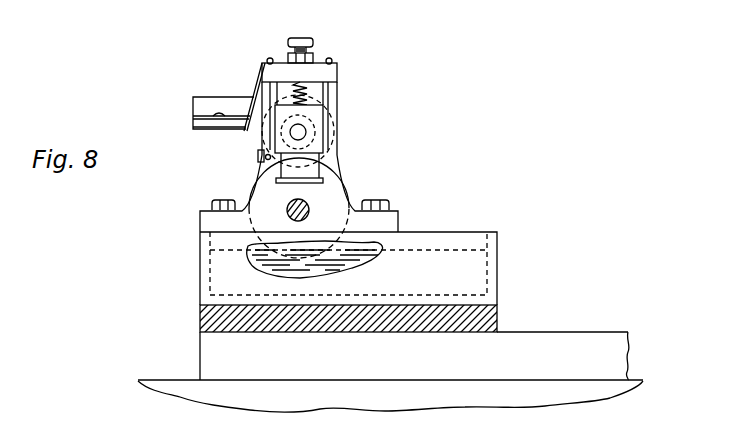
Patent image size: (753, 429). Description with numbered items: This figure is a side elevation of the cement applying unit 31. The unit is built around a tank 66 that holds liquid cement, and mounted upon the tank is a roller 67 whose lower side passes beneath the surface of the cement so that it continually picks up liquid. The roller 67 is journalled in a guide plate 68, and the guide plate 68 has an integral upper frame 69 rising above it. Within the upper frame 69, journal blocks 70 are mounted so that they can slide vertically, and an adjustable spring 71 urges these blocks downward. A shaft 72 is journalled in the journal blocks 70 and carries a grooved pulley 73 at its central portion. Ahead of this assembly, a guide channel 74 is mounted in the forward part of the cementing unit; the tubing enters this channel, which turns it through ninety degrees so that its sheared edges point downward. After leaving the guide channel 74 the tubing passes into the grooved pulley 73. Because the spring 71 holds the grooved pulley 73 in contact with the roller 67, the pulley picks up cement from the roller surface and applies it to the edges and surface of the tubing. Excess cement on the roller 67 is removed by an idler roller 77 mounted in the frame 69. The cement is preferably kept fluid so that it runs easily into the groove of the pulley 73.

The cement applying unit 31 is at (197, 303).
The tank 66 is at (205, 253).
The roller 67 is at (327, 245).
The guide plate 68 is at (252, 183).
The upper frame 69 is at (330, 93).
The journal blocks 70 is at (315, 117).
The adjustable spring 71 is at (290, 92).
The shaft 72 is at (290, 131).
The grooved pulley 73 is at (322, 158).
The guide channel 74 is at (193, 103).
The idler roller 77 is at (262, 156).